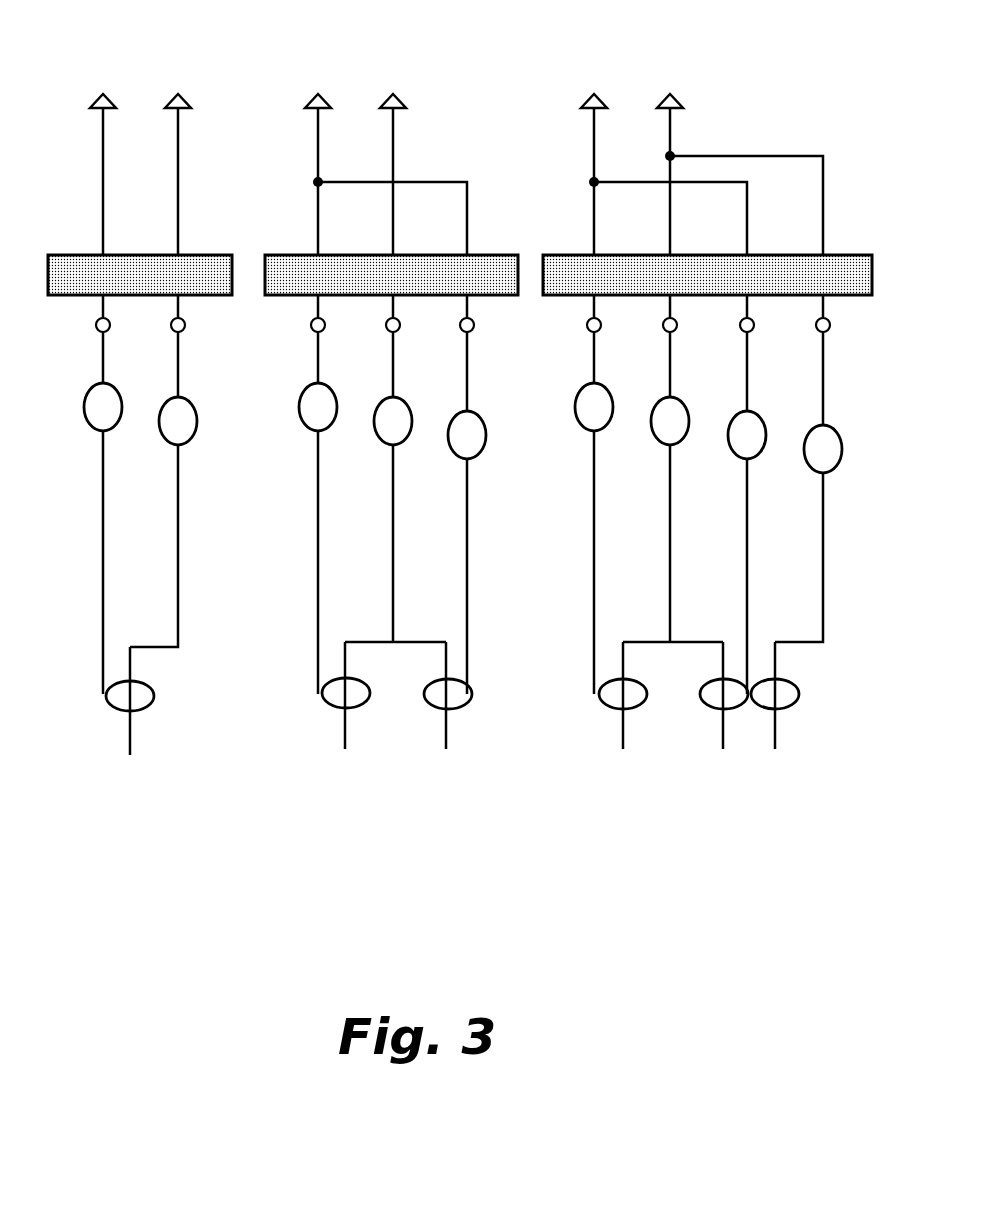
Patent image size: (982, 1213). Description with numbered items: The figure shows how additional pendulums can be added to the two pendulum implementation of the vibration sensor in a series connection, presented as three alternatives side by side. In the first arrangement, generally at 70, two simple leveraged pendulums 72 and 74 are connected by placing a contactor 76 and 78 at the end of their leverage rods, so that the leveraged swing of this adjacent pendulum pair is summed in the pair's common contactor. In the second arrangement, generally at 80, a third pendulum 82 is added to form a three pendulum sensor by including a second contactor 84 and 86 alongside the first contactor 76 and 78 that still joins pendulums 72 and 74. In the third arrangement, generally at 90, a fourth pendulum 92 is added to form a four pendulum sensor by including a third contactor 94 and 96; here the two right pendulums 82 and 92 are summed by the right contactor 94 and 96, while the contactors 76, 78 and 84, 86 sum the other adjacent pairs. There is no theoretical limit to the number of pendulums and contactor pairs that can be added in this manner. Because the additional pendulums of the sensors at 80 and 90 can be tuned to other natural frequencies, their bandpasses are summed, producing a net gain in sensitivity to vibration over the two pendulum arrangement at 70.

The two pendulum sensor 70 is at (163, 42).
The three pendulum sensor 80 is at (388, 42).
The four pendulum sensor 90 is at (725, 42).
The simple leveraged pendulum 72 is at (96, 511).
The simple leveraged pendulum 74 is at (184, 513).
The contactor 76 is at (107, 706).
The contactor 78 is at (159, 690).
The third pendulum 82 is at (466, 536).
The second contactor 84 is at (445, 738).
The second contactor 86 is at (470, 708).
The fourth pendulum 92 is at (821, 564).
The third contactor 94 is at (805, 702).
The third contactor 96 is at (783, 753).